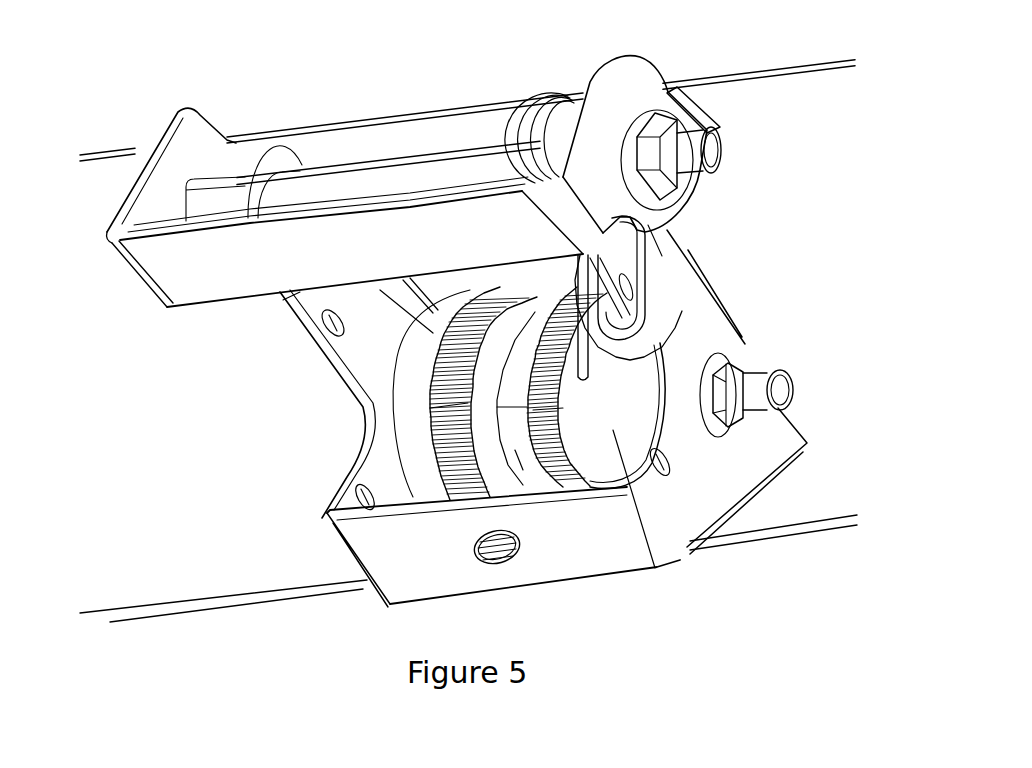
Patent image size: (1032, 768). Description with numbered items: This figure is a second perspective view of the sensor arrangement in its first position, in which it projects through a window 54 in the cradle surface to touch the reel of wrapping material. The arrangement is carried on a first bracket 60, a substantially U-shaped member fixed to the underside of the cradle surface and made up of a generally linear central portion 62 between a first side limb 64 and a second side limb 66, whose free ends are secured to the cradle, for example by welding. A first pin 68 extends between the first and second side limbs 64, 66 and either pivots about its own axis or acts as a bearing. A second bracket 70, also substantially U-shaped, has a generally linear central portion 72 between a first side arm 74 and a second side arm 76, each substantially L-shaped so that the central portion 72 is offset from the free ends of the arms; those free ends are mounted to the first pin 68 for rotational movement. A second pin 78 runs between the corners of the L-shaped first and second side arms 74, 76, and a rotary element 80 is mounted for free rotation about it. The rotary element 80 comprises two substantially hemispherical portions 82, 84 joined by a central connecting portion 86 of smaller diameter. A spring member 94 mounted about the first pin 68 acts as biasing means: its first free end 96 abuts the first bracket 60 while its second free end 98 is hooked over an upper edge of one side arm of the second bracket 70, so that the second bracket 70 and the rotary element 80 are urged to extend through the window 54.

The window 54 is at (780, 435).
The first bracket 60 is at (367, 195).
The central portion 62 is at (170, 263).
The first side limb 64 is at (155, 187).
The second side limb 66 is at (640, 87).
The first pin 68 is at (714, 150).
The second bracket 70 is at (367, 343).
The central portion 72 is at (370, 543).
The first side arm 74 is at (307, 312).
The second side arm 76 is at (697, 340).
The second pin 78 is at (787, 386).
The rotary element 80 is at (413, 457).
The substantially hemispherical portion 82 is at (415, 386).
The substantially hemispherical portion 84 is at (610, 430).
The central connecting portion 86 is at (520, 453).
The spring member 94 is at (563, 167).
The first free end 96 is at (697, 315).
The second free end 98 is at (647, 273).